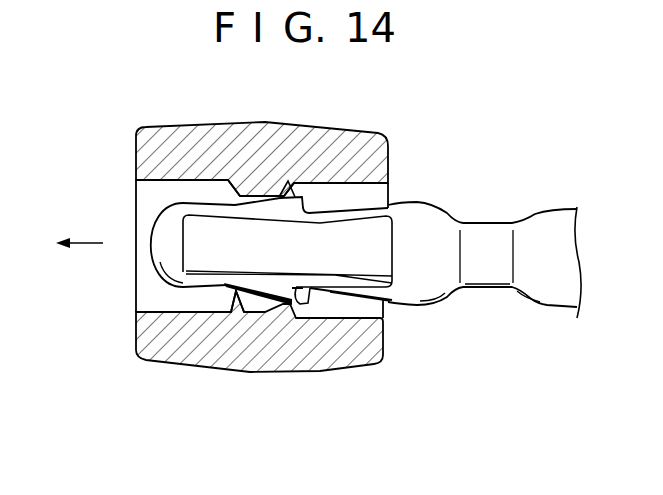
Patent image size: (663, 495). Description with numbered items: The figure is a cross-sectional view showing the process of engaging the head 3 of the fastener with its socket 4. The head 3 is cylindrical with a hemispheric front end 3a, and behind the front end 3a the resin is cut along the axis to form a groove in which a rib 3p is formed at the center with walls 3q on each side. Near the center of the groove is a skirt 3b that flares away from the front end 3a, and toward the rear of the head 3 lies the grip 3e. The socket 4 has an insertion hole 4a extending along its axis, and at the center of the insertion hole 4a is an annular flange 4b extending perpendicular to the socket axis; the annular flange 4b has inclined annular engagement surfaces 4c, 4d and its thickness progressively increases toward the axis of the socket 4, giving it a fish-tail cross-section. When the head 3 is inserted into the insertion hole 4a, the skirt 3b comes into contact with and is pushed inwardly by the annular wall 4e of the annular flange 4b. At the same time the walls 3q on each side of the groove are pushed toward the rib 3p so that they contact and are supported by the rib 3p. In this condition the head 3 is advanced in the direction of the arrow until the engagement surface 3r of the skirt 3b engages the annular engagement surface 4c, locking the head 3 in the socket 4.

The head 3 is at (452, 202).
The front end 3a is at (157, 257).
The skirt 3b is at (280, 293).
The grip 3e is at (554, 214).
The rib 3p is at (210, 262).
The walls 3q is at (338, 210).
The engagement surface 3r is at (305, 295).
The socket 4 is at (217, 116).
The insertion hole 4a is at (137, 192).
The annular flange 4b is at (258, 190).
The annular engagement surface 4c is at (221, 184).
The annular engagement surface 4d is at (300, 175).
The annular wall 4e is at (232, 300).